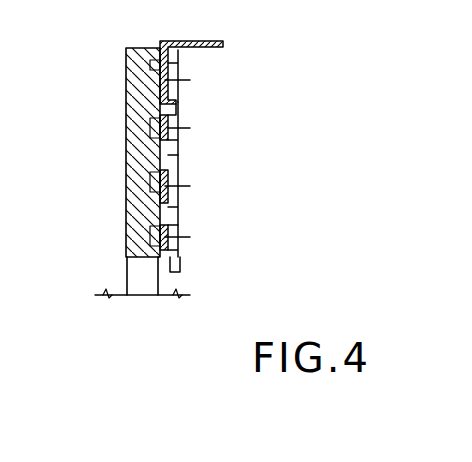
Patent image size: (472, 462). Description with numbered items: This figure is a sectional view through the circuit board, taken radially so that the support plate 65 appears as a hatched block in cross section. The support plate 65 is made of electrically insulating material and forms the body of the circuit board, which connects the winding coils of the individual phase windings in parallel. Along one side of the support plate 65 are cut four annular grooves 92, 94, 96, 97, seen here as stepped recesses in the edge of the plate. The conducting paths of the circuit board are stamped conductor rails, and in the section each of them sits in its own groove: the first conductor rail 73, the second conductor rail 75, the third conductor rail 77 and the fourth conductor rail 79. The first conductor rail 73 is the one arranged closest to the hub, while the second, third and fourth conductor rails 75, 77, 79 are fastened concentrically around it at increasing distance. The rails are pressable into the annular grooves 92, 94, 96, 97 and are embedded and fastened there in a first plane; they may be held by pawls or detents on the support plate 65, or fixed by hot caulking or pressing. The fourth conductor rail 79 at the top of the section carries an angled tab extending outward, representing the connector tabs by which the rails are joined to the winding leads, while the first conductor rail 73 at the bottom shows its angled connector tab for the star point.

The support plate 65 is at (140, 246).
The first conductor rail 73 is at (200, 245).
The second conductor rail 75 is at (200, 198).
The third conductor rail 77 is at (200, 128).
The fourth conductor rail 79 is at (200, 77).
The annular groove 92 is at (156, 228).
The annular groove 94 is at (158, 182).
The annular groove 96 is at (156, 138).
The annular groove 97 is at (156, 64).